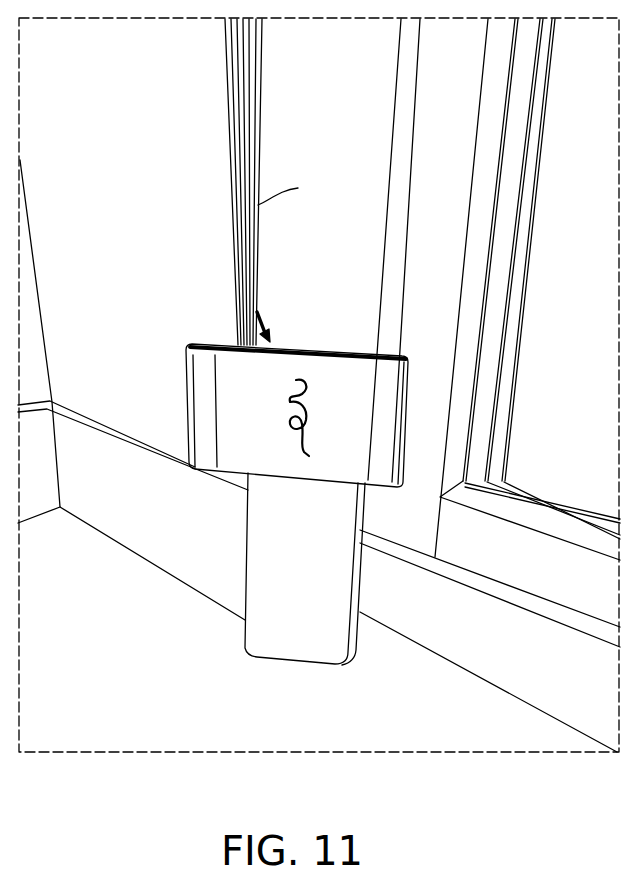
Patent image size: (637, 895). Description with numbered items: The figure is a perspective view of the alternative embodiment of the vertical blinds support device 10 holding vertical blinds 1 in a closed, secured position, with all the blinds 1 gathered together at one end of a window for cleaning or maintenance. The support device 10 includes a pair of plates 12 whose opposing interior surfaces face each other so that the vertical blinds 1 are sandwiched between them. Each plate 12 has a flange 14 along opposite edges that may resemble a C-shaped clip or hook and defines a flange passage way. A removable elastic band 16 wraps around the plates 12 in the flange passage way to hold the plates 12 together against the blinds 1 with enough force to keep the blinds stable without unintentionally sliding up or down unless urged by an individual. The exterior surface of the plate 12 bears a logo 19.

The vertical blinds 1 is at (236, 212).
The vertical blinds support device 10 is at (236, 288).
The plate 12 is at (402, 354).
The flange 14 is at (385, 397).
The elastic band 16 is at (205, 340).
The logo 19 is at (286, 412).